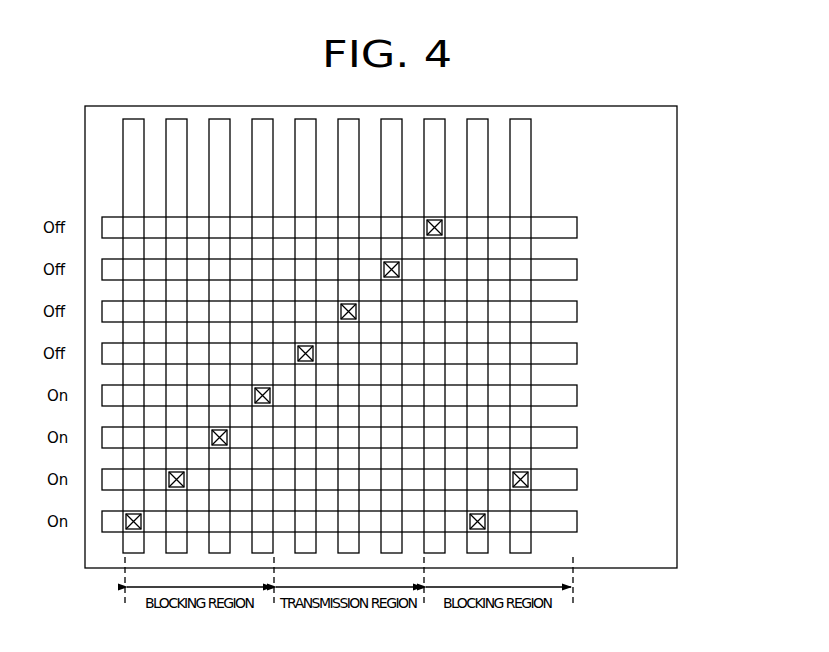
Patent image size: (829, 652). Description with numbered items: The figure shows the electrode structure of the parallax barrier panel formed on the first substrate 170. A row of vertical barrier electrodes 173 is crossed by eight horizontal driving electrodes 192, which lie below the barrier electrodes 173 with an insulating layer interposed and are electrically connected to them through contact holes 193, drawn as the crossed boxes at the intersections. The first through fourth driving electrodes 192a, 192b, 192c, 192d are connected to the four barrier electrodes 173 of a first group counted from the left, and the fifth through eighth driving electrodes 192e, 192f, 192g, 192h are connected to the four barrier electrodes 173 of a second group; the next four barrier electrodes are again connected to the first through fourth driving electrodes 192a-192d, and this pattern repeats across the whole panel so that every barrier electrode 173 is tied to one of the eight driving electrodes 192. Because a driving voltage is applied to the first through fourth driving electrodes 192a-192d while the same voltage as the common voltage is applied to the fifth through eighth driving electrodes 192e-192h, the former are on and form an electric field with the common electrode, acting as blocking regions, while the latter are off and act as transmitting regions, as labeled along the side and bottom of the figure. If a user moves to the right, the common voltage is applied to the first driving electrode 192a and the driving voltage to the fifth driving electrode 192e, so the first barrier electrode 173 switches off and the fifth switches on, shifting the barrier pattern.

The first substrate 170 is at (690, 566).
The barrier electrodes 173 is at (134, 555).
The driving electrodes 192 is at (361, 413).
The first driving electrode 192a is at (342, 562).
The second driving electrode 192b is at (577, 480).
The third driving electrode 192c is at (577, 438).
The fourth driving electrode 192d is at (577, 396).
The fifth driving electrode 192e is at (577, 354).
The sixth driving electrode 192f is at (577, 312).
The seventh driving electrode 192g is at (577, 270).
The eighth driving electrode 192h is at (577, 228).
The contact holes 193 is at (128, 536).